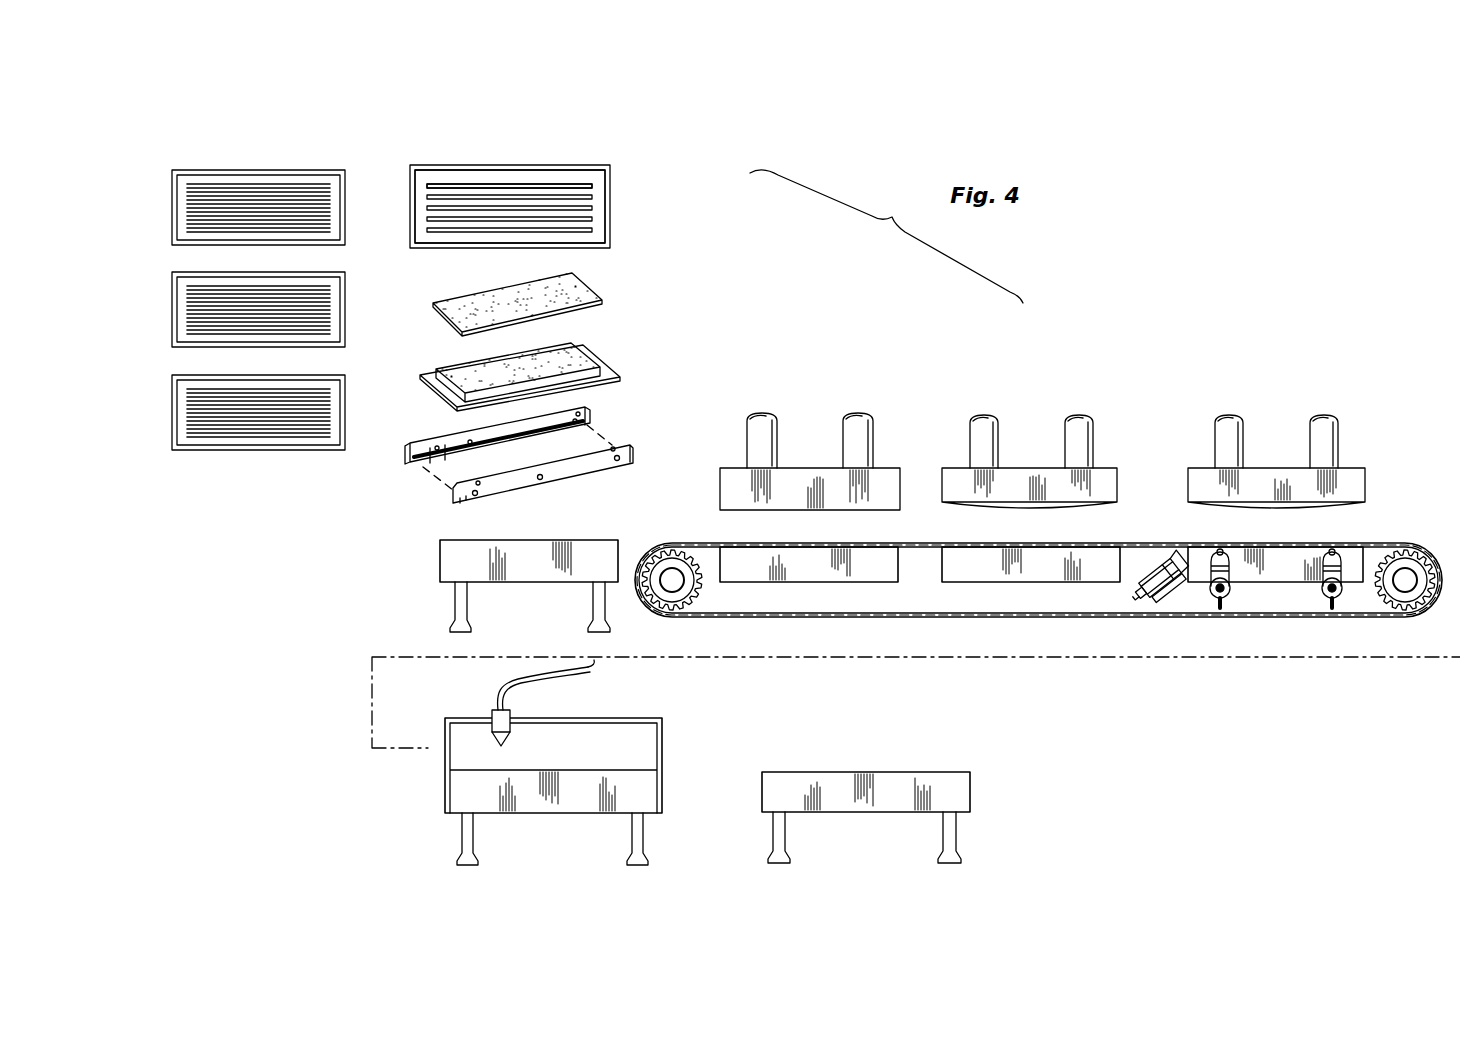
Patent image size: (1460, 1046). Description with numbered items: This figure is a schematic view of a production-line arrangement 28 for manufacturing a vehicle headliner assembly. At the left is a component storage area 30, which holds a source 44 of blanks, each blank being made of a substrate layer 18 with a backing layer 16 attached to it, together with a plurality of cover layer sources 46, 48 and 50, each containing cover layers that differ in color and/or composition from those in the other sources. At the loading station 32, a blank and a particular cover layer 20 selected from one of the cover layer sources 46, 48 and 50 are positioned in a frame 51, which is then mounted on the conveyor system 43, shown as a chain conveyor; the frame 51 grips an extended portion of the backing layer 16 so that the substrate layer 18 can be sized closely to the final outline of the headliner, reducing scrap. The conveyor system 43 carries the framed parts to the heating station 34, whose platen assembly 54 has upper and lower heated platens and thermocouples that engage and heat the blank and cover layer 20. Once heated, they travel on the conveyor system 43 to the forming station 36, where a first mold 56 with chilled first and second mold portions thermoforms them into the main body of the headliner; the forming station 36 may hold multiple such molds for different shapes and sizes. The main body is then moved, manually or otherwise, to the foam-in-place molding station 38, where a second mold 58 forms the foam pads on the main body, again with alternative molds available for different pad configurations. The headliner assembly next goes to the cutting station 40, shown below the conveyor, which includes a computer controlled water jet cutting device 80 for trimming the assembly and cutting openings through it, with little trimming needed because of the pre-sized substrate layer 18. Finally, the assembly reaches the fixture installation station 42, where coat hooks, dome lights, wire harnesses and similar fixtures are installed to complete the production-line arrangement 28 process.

The production-line arrangement 28 is at (295, 676).
The component storage area 30 is at (160, 163).
The cover layer source 46 is at (345, 208).
The cover layer source 48 is at (345, 310).
The cover layer source 50 is at (345, 413).
The source of blanks 44 is at (610, 205).
The backing layer 16 is at (432, 184).
The substrate layer 18 is at (535, 182).
The cover layer 20 is at (605, 293).
The frame 51 is at (636, 461).
The heating station 34 is at (902, 414).
The platen assembly 54 is at (906, 485).
The forming station 36 is at (1120, 414).
The first mold 56 is at (1126, 485).
The foam-in-place molding station 38 is at (1367, 414).
The second mold 58 is at (1372, 485).
The conveyor system 43 is at (1052, 617).
The loading station 32 is at (434, 558).
The cutting station 40 is at (667, 717).
The water jet cutting device 80 is at (494, 714).
The fixture installation station 42 is at (973, 757).